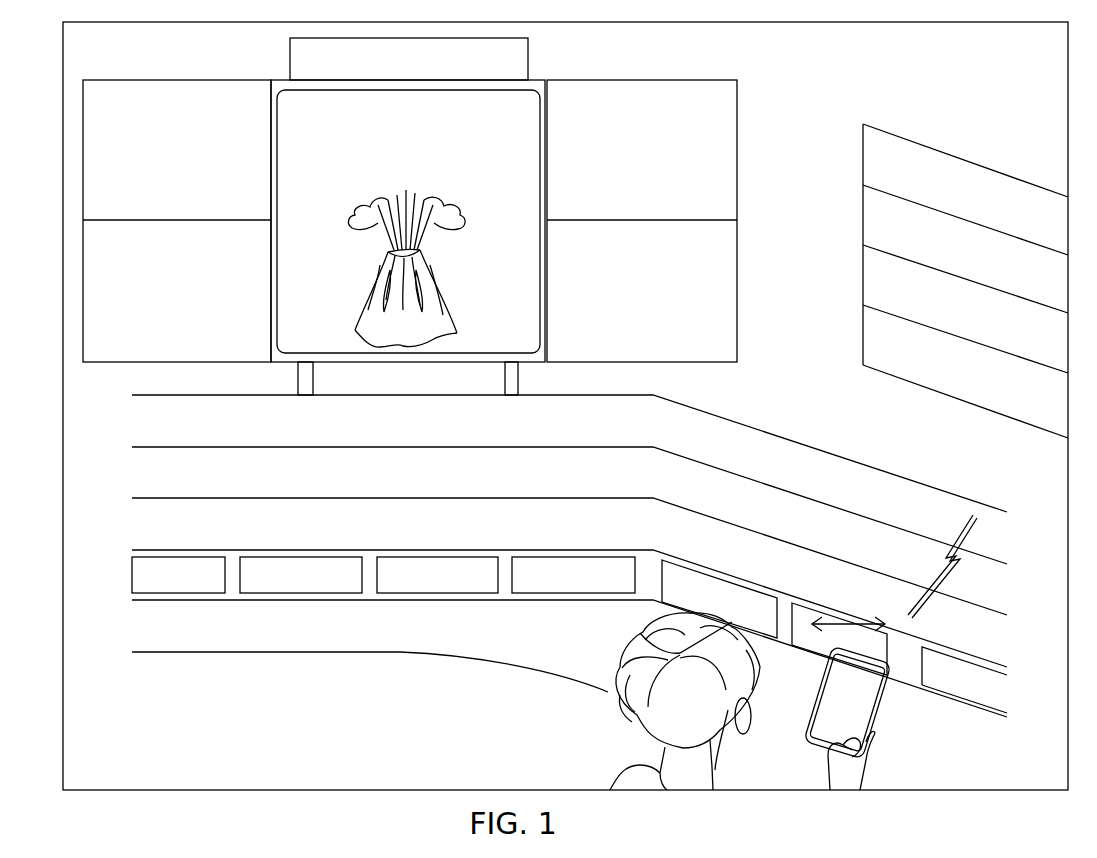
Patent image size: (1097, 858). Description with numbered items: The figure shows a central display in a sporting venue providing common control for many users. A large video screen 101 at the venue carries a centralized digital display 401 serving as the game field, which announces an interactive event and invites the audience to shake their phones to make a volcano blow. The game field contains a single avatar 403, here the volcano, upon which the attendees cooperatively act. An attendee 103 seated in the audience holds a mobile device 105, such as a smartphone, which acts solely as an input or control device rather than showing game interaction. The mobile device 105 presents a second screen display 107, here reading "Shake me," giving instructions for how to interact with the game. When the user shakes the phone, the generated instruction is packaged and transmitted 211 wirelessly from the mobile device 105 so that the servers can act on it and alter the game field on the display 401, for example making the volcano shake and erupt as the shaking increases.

The video screen 101 is at (528, 72).
The centralized digital display 401 is at (410, 215).
The avatar 403 is at (433, 296).
The attendee 103 is at (615, 635).
The mobile device 105 is at (854, 718).
The second screen display 107 is at (868, 700).
The transmission 211 is at (950, 570).